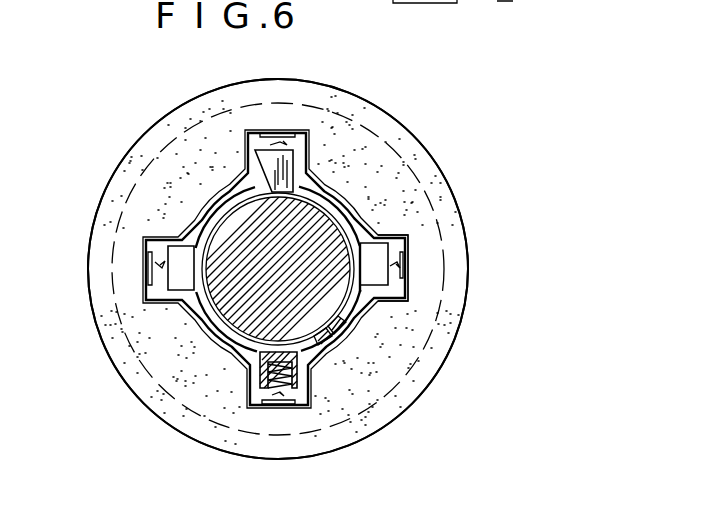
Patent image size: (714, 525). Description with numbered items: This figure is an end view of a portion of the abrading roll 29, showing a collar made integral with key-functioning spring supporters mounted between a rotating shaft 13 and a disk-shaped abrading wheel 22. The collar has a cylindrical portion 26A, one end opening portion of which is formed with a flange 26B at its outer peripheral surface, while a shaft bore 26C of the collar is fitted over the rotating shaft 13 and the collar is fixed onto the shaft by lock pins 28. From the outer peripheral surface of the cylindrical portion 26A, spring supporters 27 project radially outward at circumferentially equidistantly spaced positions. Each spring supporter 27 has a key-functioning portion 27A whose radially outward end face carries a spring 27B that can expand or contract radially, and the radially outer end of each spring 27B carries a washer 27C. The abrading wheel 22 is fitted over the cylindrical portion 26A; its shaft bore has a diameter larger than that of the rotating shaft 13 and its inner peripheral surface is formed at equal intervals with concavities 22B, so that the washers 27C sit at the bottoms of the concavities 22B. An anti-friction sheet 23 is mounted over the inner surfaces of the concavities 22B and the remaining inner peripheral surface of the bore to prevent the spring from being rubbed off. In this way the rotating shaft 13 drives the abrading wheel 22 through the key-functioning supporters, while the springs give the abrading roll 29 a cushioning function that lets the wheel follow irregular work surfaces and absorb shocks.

The rotating shaft 13 is at (248, 213).
The abrading wheel 22 is at (422, 372).
The concavity 22B is at (408, 302).
The anti-friction sheet 23 is at (350, 345).
The cylindrical portion 26A is at (342, 196).
The flange 26B is at (357, 121).
The shaft bore 26C is at (216, 305).
The spring supporter 27 is at (299, 139).
The key-functioning portion 27A is at (374, 246).
The spring 27B is at (408, 236).
The washer 27C is at (408, 268).
The lock pin 28 is at (331, 338).
The abrading roll 29 is at (483, 292).